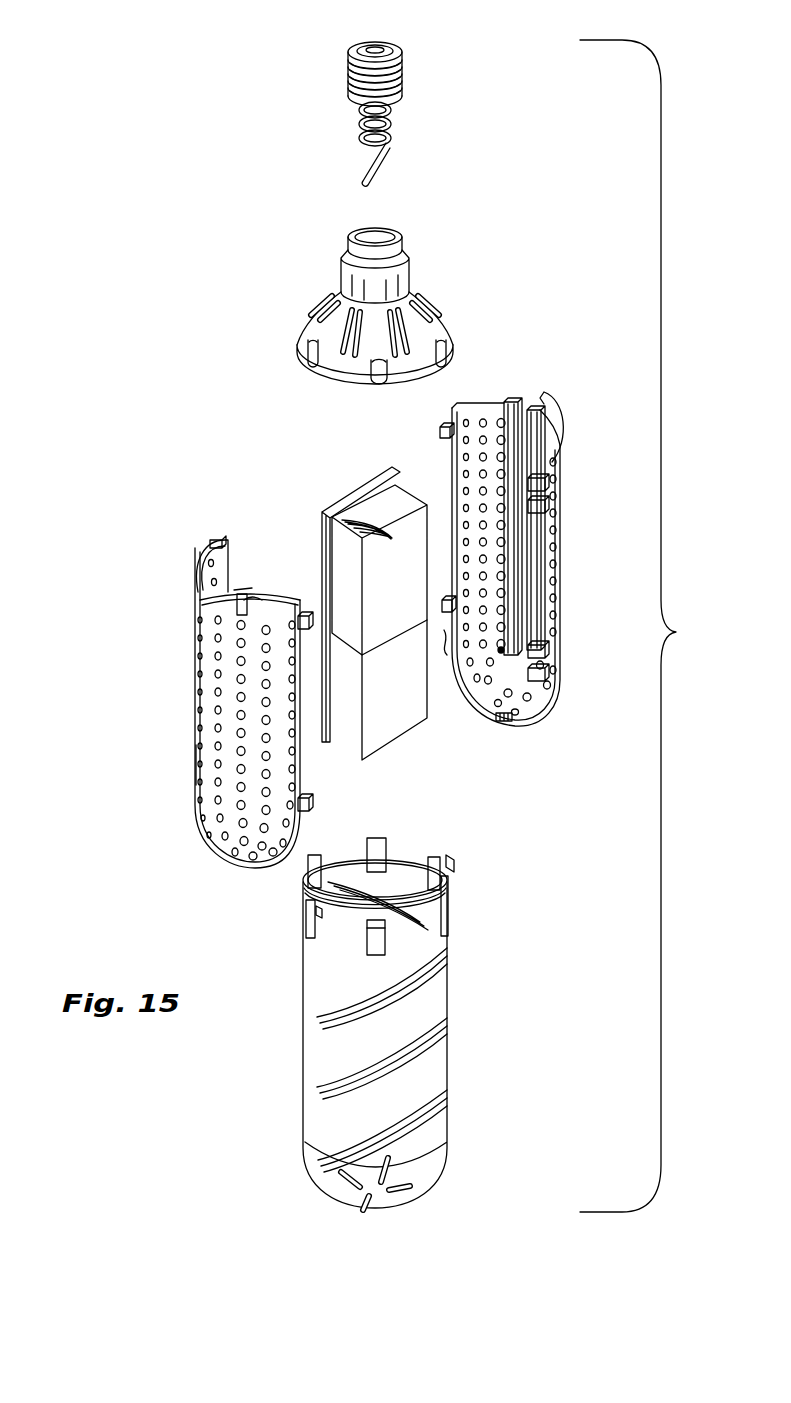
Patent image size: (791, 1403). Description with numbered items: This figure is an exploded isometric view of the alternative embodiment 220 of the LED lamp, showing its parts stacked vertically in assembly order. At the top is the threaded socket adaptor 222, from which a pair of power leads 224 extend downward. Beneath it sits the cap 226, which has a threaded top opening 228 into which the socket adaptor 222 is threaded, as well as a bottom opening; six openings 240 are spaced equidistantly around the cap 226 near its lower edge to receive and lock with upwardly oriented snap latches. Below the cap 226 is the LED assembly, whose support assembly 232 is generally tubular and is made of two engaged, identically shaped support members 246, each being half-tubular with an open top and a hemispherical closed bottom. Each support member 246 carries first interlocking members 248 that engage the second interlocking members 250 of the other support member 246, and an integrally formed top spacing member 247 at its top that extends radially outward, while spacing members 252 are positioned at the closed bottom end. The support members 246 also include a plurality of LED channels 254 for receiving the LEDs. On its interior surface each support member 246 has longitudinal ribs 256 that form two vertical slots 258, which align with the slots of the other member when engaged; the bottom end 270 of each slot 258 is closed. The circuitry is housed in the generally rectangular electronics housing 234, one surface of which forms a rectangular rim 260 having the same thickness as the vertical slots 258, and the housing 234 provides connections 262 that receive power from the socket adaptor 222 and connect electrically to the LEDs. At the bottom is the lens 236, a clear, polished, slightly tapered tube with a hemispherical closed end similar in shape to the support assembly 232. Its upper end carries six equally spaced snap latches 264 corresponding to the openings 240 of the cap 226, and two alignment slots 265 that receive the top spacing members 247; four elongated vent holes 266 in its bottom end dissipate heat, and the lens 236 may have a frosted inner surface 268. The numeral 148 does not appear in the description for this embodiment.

The alternative embodiment 220 is at (653, 626).
The threaded socket adaptor 222 is at (376, 44).
The power leads 224 is at (395, 178).
The cap 226 is at (410, 277).
The threaded top opening 228 is at (373, 226).
The support assembly 232 is at (452, 452).
The electronics housing 234 is at (402, 732).
The lens 236 is at (306, 998).
The openings 240 is at (313, 372).
The support members 246 is at (490, 400).
The top spacing member 247 is at (544, 392).
The first interlocking members 248 is at (440, 432).
The second interlocking members 250 is at (550, 484).
The spacing members 252 is at (506, 722).
The LED channels 254 is at (200, 780).
The longitudinal ribs 256 is at (250, 603).
The vertical slots 258 is at (534, 406).
The rectangular rim 260 is at (323, 528).
The connections 262 is at (392, 538).
The snap latches 264 is at (313, 857).
The alignment slots 265 is at (456, 862).
The elongated vent holes 266 is at (362, 1200).
The frosted inner surface 268 is at (413, 870).
The bottom end 270 is at (499, 651).
The tab 148 is at (441, 654).